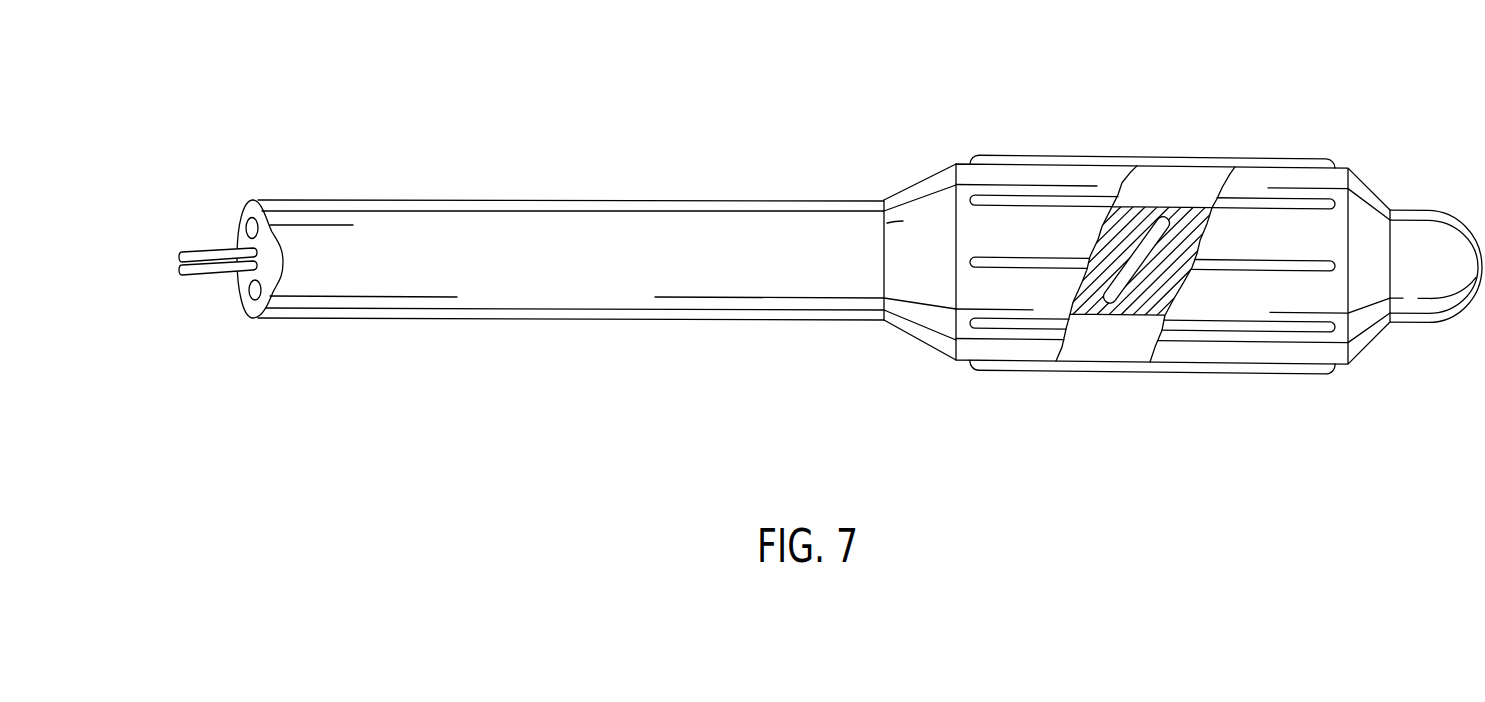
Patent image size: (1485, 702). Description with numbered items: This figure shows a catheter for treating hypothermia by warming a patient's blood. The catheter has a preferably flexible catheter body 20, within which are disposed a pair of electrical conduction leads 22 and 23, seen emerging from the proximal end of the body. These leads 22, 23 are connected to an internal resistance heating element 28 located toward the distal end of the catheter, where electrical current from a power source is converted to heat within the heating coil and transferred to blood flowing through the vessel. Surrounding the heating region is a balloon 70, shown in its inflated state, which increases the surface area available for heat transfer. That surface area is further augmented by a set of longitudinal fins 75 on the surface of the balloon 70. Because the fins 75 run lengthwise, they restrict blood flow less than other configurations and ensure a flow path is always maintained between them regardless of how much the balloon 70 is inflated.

The catheter body 20 is at (510, 227).
The electrical conduction lead 22 is at (207, 249).
The electrical conduction lead 23 is at (199, 275).
The balloon 70 is at (913, 338).
The longitudinal fins 75 is at (1273, 205).
The resistance heating element 28 is at (1130, 293).